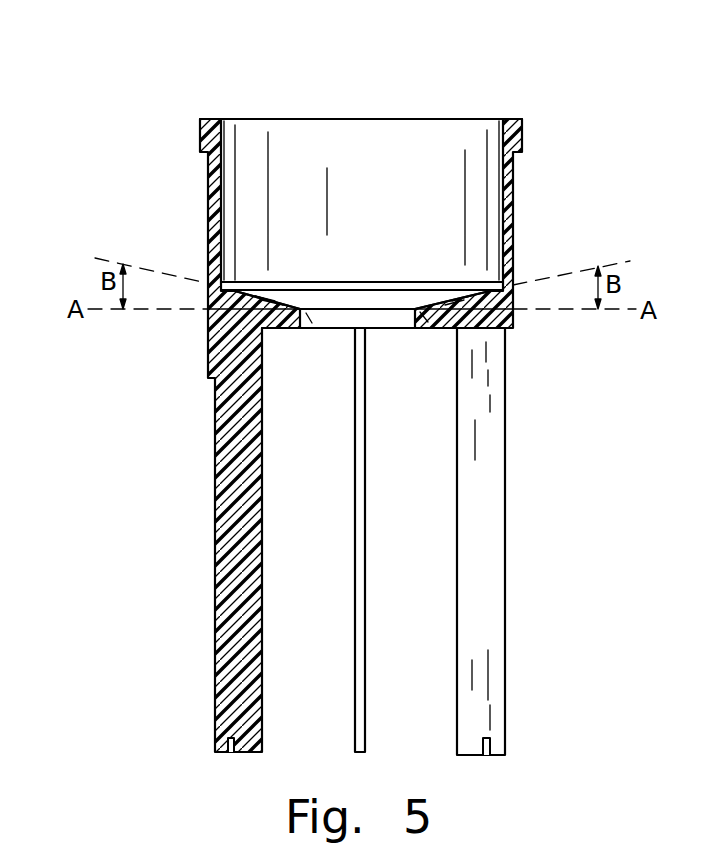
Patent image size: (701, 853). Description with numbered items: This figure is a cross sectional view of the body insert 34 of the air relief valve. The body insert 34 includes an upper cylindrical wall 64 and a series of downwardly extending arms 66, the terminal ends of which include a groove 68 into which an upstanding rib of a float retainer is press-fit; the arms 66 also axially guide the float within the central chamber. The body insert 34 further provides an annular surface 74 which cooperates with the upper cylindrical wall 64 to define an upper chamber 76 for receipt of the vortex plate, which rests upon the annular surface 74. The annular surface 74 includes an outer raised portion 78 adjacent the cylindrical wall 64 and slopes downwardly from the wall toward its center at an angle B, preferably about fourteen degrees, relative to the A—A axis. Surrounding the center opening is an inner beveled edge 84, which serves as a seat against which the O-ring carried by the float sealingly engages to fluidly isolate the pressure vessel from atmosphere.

The body insert 34 is at (322, 428).
The upper cylindrical wall 64 is at (508, 177).
The arms 66 is at (215, 540).
The groove 68 is at (231, 752).
The annular surface 74 is at (282, 302).
The upper chamber 76 is at (384, 140).
The outer raised portion 78 is at (228, 286).
The inner beveled edge 84 is at (298, 327).